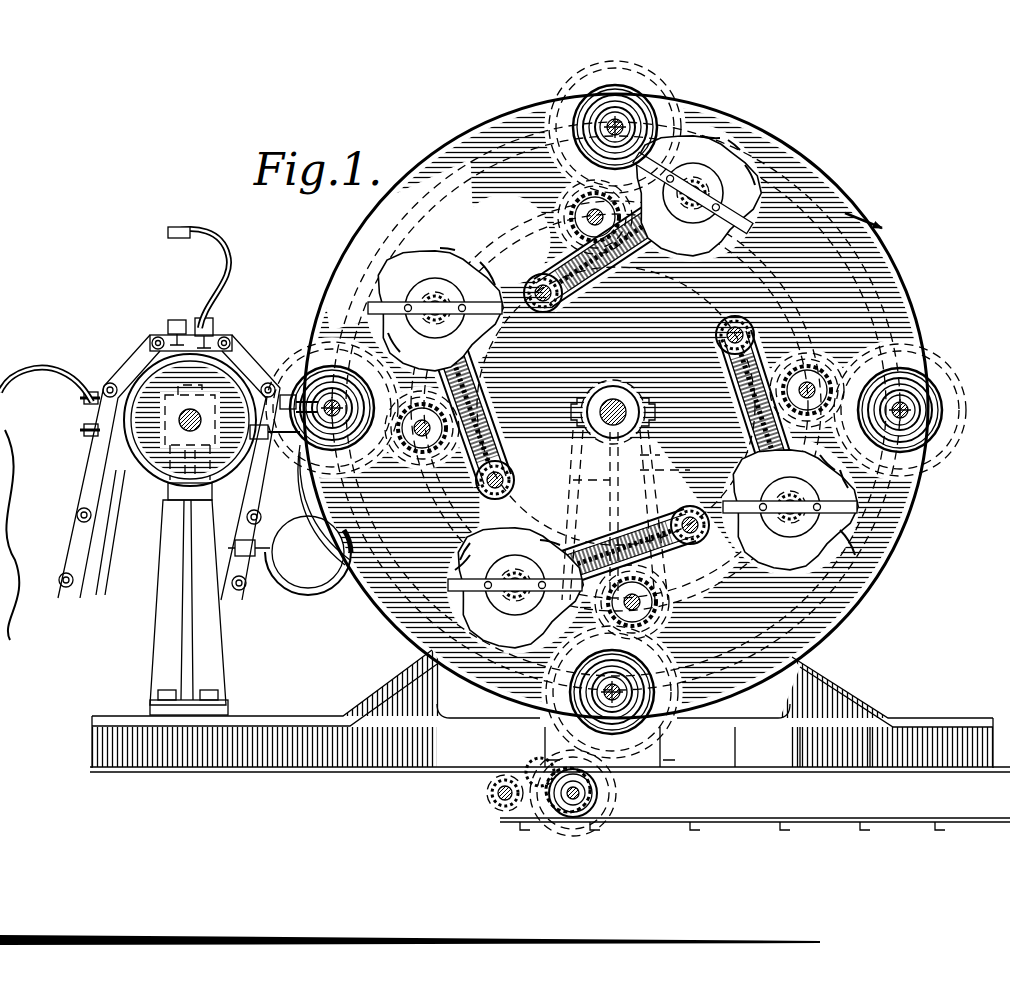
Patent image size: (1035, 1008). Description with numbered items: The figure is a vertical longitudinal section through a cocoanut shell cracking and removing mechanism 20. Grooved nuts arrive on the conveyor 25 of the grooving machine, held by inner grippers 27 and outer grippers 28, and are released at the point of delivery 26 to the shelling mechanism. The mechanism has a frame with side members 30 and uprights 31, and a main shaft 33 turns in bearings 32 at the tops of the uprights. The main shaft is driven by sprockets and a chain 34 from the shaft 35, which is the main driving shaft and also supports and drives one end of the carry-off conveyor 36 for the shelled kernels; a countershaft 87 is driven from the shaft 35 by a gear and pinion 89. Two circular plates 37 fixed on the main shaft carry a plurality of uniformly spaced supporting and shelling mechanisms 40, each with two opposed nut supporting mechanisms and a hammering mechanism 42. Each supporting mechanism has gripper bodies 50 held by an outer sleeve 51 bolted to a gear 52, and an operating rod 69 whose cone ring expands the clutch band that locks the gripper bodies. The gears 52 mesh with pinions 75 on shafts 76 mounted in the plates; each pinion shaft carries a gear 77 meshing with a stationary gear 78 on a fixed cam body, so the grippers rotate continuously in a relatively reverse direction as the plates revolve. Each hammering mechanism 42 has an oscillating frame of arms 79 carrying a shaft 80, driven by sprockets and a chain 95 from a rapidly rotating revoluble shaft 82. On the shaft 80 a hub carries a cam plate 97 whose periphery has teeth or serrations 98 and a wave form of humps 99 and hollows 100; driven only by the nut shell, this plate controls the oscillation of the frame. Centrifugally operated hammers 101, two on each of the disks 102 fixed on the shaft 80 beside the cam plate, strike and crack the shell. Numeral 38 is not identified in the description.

The shell cracking and removing mechanism 20 is at (631, 401).
The conveyor 25 is at (117, 350).
The point of delivery 26 is at (282, 318).
The inner grippers 27 is at (180, 322).
The outer grippers 28 is at (176, 236).
The side members 30 is at (936, 718).
The uprights 31 is at (616, 515).
The bearings 32 is at (616, 393).
The main shaft 33 is at (612, 400).
The chain 34 is at (660, 475).
The shaft 35 is at (598, 794).
The carry-off conveyor 36 is at (842, 772).
The circular plates 37 is at (915, 290).
The intermediate gear 38 is at (536, 768).
The supporting and shelling mechanisms 40 is at (629, 398).
The hammering mechanism 42 is at (742, 138).
The gripper bodies 50 is at (647, 386).
The outer sleeve 51 is at (639, 395).
The gear 52 is at (629, 398).
The operating rod 69 is at (620, 122).
The pinions 75 is at (621, 415).
The shaft 76 is at (588, 222).
The gear 77 is at (608, 409).
The stationary gear 78 is at (690, 302).
The arms 79 is at (622, 262).
The shaft 80 is at (430, 308).
The revoluble shaft 82 is at (556, 302).
The countershaft 87 is at (486, 803).
The pinion 89 is at (496, 808).
The chain 95 is at (612, 390).
The cam plate 97 is at (661, 370).
The teeth or serrations 98 is at (412, 265).
The humps 99 is at (705, 142).
The hollows 100 is at (458, 258).
The centrifugally operated hammers 101 is at (660, 165).
The disks 102 is at (607, 372).